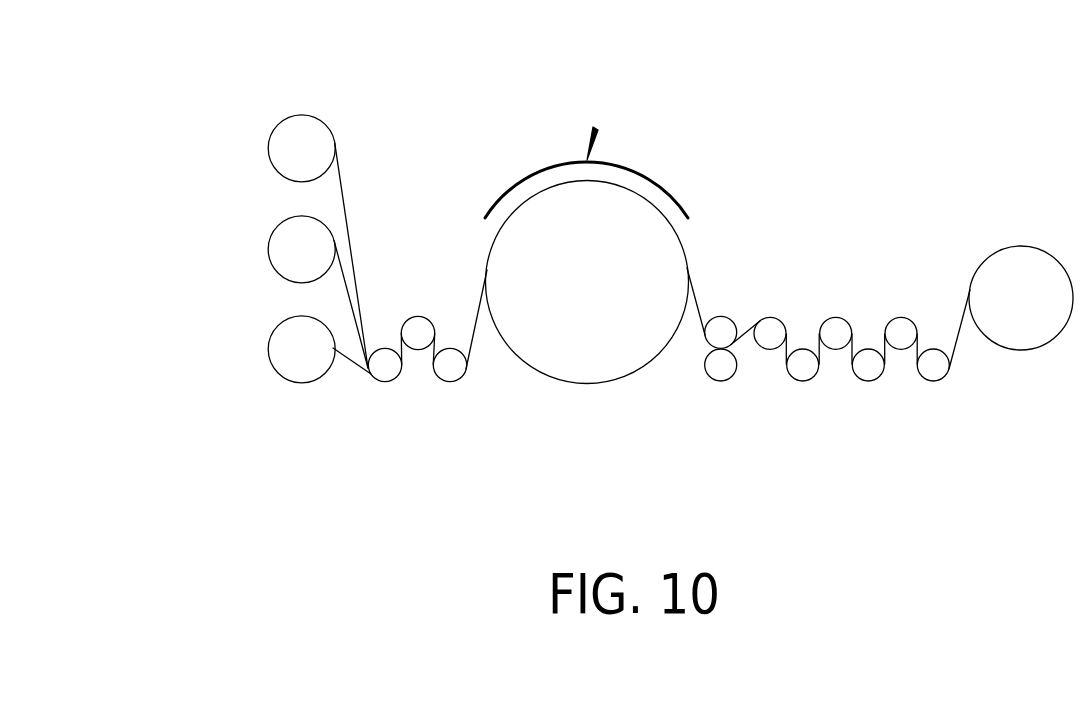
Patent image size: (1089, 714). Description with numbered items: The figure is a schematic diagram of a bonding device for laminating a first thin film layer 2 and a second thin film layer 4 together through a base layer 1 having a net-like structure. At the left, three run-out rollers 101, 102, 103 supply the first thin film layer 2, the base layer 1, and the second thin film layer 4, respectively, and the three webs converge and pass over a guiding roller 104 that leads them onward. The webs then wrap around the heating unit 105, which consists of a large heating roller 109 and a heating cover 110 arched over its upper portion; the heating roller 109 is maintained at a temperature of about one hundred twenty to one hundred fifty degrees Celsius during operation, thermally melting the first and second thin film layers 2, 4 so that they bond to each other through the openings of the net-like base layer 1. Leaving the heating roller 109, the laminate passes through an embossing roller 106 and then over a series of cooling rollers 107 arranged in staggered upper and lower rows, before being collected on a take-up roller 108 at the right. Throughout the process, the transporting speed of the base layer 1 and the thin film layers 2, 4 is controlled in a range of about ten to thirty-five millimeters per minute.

The base layer 1 is at (347, 295).
The first thin film layer 2 is at (346, 178).
The second thin film layer 4 is at (348, 363).
The run-out roller 101 is at (270, 150).
The run-out roller 102 is at (268, 251).
The run-out roller 103 is at (270, 351).
The guiding roller 104 is at (457, 388).
The heating unit 105 is at (594, 127).
The embossing roller 106 is at (720, 318).
The cooling rollers 107 is at (919, 307).
The winding roll 108 is at (1018, 247).
The heating roller 109 is at (582, 380).
The heating cover 110 is at (660, 183).